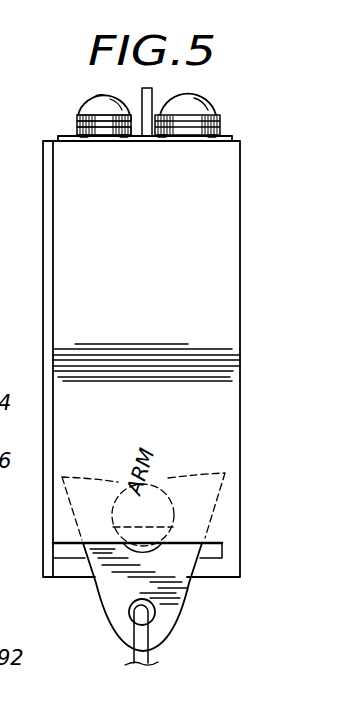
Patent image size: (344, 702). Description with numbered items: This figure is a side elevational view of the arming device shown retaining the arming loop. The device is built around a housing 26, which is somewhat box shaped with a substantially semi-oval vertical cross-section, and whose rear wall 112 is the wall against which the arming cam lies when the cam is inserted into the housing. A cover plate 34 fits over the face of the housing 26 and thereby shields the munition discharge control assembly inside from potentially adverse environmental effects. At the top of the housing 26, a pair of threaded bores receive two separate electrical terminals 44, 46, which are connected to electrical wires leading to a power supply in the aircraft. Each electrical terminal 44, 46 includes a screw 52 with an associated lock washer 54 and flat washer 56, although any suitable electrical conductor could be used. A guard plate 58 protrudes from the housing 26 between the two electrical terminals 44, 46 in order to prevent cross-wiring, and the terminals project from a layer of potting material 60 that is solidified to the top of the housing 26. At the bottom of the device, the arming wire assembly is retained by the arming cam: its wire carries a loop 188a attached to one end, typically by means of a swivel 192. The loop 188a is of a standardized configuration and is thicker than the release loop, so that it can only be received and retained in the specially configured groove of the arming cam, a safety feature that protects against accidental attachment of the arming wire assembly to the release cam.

The rear wall 112 is at (240, 237).
The potting material 60 is at (225, 137).
The electrical terminal 44 is at (80, 108).
The screw 52 is at (98, 97).
The lock washer 54 is at (77, 120).
The flat washer 56 is at (77, 128).
The guard plate 58 is at (152, 92).
The electrical terminal 46 is at (205, 108).
The housing 26 is at (208, 328).
The cover plate 34 is at (44, 574).
The loop 188a is at (192, 572).
The swivel 192 is at (135, 653).